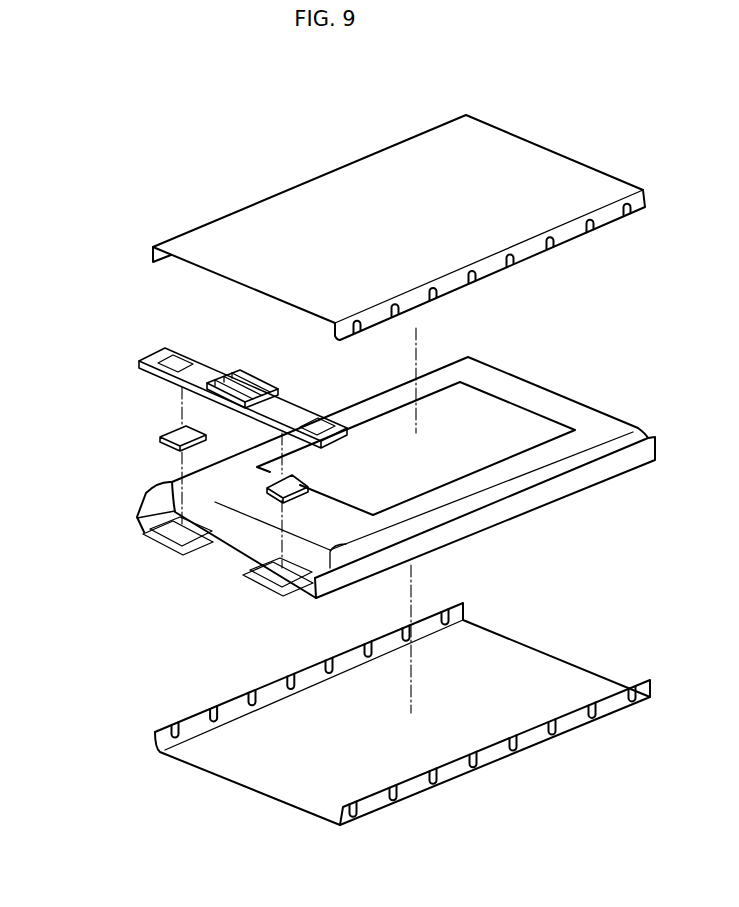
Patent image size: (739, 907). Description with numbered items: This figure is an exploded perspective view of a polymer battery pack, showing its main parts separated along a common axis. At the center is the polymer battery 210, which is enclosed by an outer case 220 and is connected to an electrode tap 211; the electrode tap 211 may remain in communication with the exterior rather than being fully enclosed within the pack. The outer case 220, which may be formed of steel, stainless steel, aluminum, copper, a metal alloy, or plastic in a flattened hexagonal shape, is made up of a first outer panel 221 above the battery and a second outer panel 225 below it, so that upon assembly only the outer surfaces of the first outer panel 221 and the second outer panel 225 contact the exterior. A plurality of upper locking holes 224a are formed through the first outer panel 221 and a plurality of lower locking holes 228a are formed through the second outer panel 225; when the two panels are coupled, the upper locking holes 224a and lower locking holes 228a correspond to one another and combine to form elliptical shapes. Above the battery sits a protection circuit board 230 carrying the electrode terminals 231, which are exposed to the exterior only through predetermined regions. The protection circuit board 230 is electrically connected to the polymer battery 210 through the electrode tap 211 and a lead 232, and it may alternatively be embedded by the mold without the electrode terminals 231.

The polymer battery 210 is at (361, 477).
The electrode tap 211 is at (150, 522).
The outer case 220 is at (399, 214).
The first outer panel 221 is at (337, 212).
The upper locking holes 224a is at (596, 228).
The second outer panel 225 is at (417, 742).
The lower locking holes 228a is at (595, 708).
The protection circuit board 230 is at (209, 371).
The electrode terminals 231 is at (240, 370).
The lead 232 is at (181, 428).